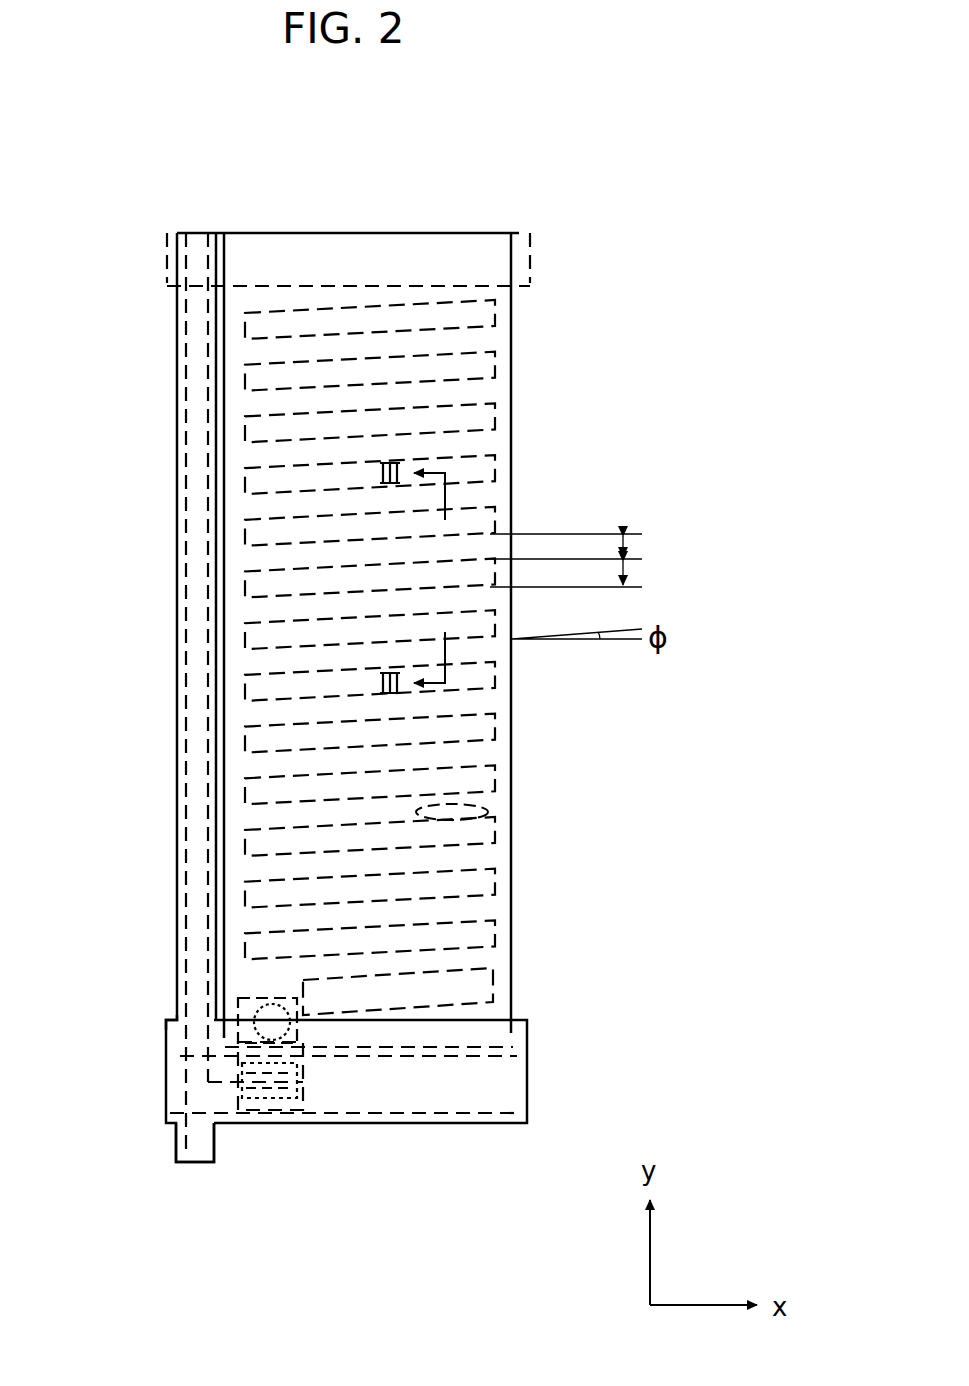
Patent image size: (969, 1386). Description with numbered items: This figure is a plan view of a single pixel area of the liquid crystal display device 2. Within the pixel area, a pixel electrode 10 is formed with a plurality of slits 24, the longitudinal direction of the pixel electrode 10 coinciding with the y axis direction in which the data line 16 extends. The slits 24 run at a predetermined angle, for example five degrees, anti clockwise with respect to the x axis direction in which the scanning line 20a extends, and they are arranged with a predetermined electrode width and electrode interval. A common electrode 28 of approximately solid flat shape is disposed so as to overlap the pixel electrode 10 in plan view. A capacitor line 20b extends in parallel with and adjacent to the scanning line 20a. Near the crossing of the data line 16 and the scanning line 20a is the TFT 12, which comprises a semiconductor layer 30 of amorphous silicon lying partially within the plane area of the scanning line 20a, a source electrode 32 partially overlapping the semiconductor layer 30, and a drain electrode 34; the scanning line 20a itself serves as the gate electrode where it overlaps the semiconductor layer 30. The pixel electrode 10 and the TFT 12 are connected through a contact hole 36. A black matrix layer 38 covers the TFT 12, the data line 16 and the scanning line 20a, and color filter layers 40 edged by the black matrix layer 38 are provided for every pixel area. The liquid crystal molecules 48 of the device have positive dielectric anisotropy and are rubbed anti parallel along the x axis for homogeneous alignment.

The liquid crystal display device 2 is at (489, 145).
The pixel electrode 10 is at (502, 907).
The TFT 12 is at (243, 1140).
The data line 16 is at (190, 340).
The scanning line 20a is at (500, 1080).
The capacitor line 20b is at (523, 263).
The slits 24 is at (440, 432).
The common electrode 28 is at (503, 345).
The semiconductor layer 30 is at (273, 1095).
The source electrode 32 is at (238, 1092).
The drain electrode 34 is at (303, 1038).
The contact hole 36 is at (257, 1012).
The black matrix layer 38 is at (172, 1036).
The color filter layers 40 is at (502, 862).
The liquid crystal molecules 48 is at (488, 808).